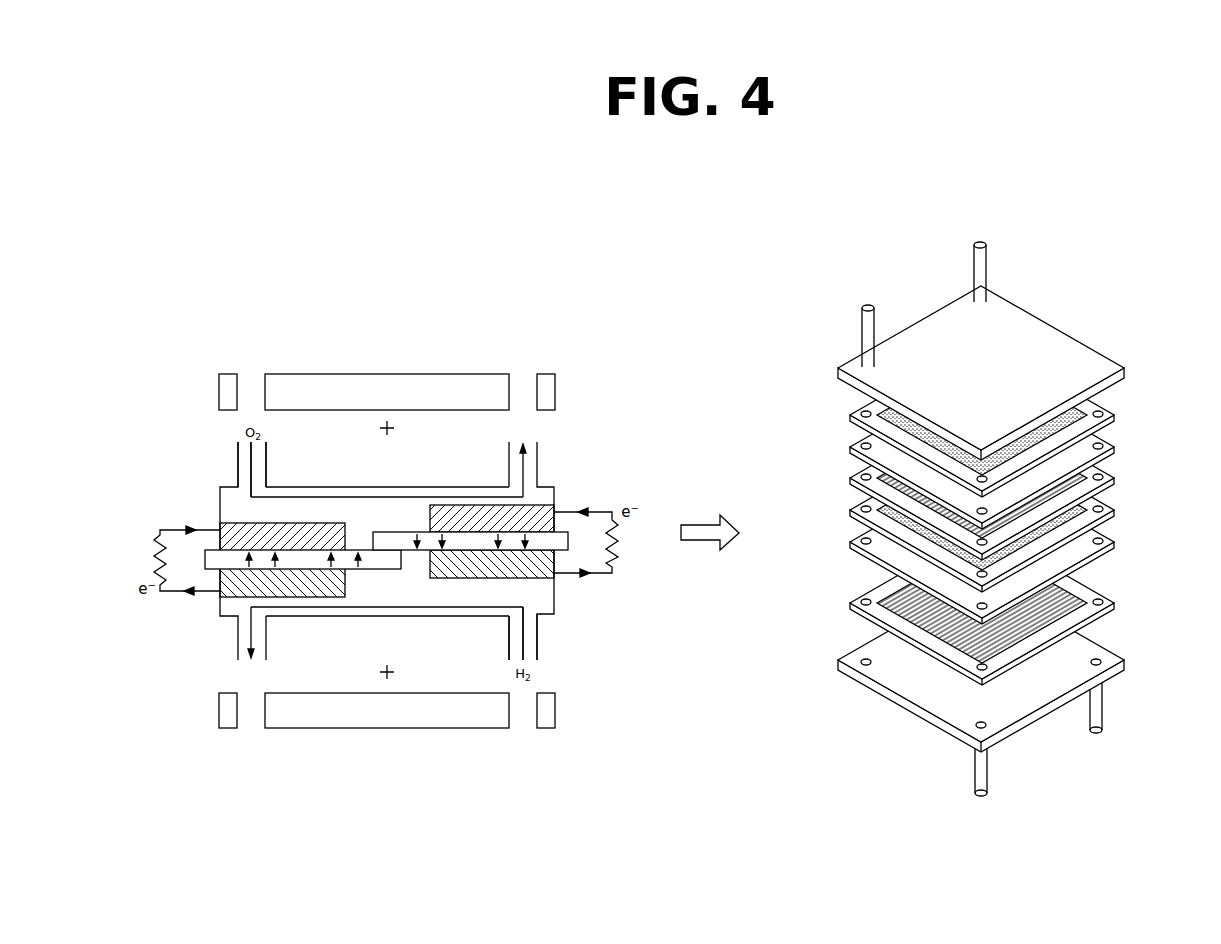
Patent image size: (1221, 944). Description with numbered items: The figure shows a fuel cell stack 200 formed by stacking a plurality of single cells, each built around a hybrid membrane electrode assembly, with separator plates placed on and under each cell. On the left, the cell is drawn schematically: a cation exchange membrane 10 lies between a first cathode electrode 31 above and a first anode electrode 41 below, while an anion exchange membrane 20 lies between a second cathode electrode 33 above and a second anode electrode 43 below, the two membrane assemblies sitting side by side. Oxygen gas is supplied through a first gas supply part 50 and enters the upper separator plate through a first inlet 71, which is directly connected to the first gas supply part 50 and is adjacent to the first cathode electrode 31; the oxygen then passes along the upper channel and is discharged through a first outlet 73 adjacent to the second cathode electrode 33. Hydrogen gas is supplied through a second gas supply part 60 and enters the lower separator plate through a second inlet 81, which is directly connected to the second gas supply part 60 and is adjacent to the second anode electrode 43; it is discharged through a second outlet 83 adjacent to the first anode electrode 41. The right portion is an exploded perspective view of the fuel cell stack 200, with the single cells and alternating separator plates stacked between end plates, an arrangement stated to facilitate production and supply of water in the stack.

The cation exchange membrane 10 is at (207, 561).
The anion exchange membrane 20 is at (566, 541).
The first cathode electrode 31 is at (225, 530).
The second cathode electrode 33 is at (554, 510).
The first anode electrode 41 is at (225, 595).
The second anode electrode 43 is at (554, 578).
The first gas supply part 50 is at (240, 457).
The second gas supply part 60 is at (537, 653).
The first inlet 71 is at (248, 362).
The first outlet 73 is at (519, 362).
The second inlet 81 is at (519, 740).
The second outlet 83 is at (248, 740).
The fuel cell stack 200 is at (982, 498).